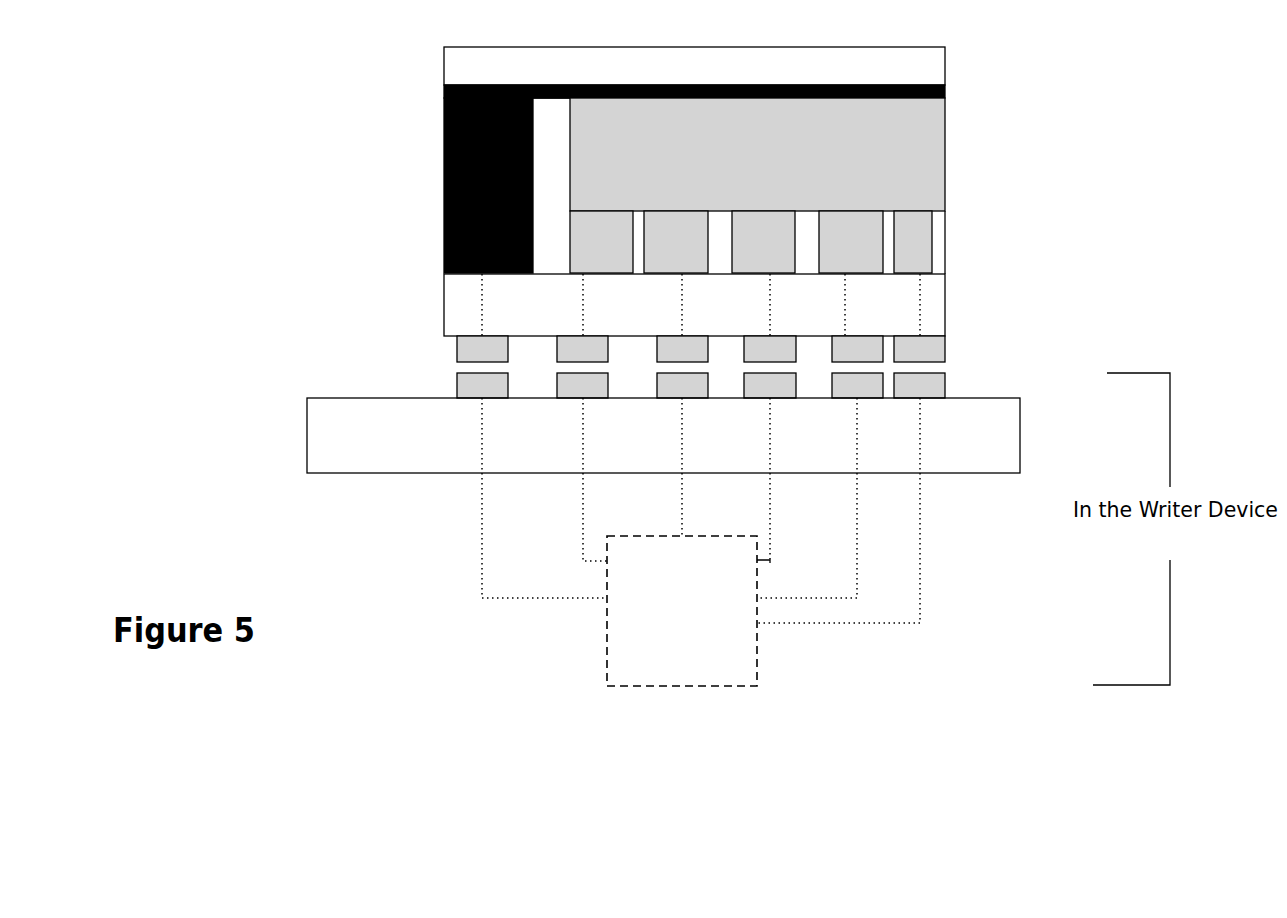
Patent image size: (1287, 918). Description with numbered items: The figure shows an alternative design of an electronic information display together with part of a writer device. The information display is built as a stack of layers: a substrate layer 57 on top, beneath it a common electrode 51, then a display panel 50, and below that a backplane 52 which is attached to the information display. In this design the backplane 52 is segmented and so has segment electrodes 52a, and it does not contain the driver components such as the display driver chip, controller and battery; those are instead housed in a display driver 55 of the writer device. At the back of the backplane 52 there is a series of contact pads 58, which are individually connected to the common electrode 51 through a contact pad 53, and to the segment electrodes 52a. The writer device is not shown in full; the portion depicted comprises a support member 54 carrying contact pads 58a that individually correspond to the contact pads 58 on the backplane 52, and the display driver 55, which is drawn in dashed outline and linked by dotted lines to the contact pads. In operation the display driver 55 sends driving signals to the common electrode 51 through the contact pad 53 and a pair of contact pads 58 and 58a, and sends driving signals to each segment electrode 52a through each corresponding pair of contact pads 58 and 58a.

The substrate layer 57 is at (947, 61).
The common electrode 51 is at (947, 98).
The display panel 50 is at (947, 161).
The contact pad 53 is at (443, 211).
The segment electrodes 52a is at (934, 260).
The backplane 52 is at (947, 311).
The contact pads 58 is at (453, 348).
The contact pads 58a is at (947, 385).
The support member 54 is at (306, 437).
The display driver 55 is at (701, 579).